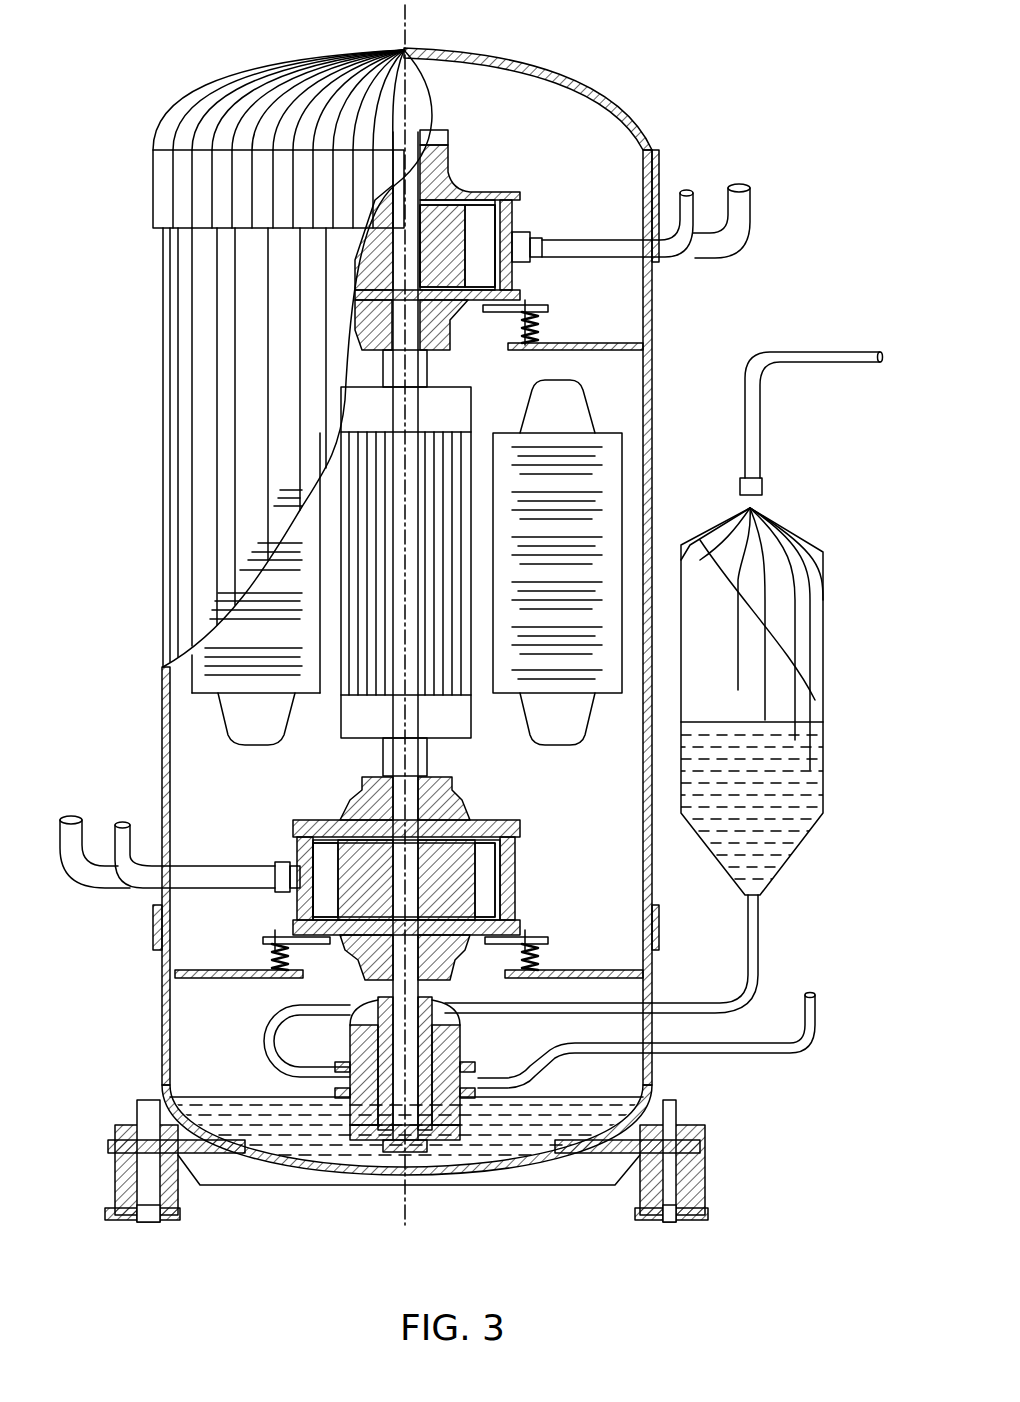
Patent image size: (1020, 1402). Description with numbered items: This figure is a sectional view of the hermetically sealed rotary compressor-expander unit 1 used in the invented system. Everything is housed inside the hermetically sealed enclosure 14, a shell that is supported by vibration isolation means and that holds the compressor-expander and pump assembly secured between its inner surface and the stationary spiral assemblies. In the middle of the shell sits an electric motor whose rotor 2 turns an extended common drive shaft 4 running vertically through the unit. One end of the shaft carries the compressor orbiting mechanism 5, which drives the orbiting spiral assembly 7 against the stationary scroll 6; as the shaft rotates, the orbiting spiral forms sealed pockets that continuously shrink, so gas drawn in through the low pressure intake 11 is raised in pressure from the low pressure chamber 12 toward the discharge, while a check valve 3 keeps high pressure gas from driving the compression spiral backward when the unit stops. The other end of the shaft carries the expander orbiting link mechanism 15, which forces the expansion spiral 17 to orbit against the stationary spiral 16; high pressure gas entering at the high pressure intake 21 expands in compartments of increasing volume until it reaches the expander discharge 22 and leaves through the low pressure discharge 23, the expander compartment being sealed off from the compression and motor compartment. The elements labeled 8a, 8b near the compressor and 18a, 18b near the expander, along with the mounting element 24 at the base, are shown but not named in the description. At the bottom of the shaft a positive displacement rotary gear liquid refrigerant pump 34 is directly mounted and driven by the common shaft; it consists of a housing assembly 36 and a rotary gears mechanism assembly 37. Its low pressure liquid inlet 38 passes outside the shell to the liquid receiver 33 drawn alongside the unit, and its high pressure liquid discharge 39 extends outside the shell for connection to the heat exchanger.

The compressor-expander unit 1 is at (148, 1275).
The rotor 2 is at (438, 445).
The check valve 3 is at (595, 470).
The drive shaft 4 is at (408, 775).
The compressor orbiting mechanism 5 is at (455, 185).
The stationary scroll 6 is at (510, 235).
The orbiting spiral assembly 7 is at (455, 305).
The upper compression chamber 8a is at (503, 218).
The upper compression chamber 8b is at (457, 246).
The low pressure intake 11 is at (740, 186).
The low pressure chamber 12 is at (683, 192).
The hermetically sealed enclosure 14 is at (160, 575).
The expander orbiting link mechanism 15 is at (512, 935).
The stationary spiral 16 is at (450, 945).
The expansion spiral 17 is at (460, 890).
The lower compression chamber 18a is at (495, 840).
The lower compression chamber 18b is at (404, 880).
The high pressure intake 21 is at (73, 818).
The expander discharge 22 is at (122, 822).
The low pressure discharge 23 is at (555, 1170).
The mounting foot 24 is at (700, 1195).
The liquid receiver 33 is at (830, 628).
The liquid refrigerant pump 34 is at (418, 1150).
The housing assembly 36 is at (458, 1035).
The rotary gears mechanism assembly 37 is at (352, 1038).
The low pressure liquid inlet 38 is at (760, 970).
The high pressure liquid discharge 39 is at (808, 992).